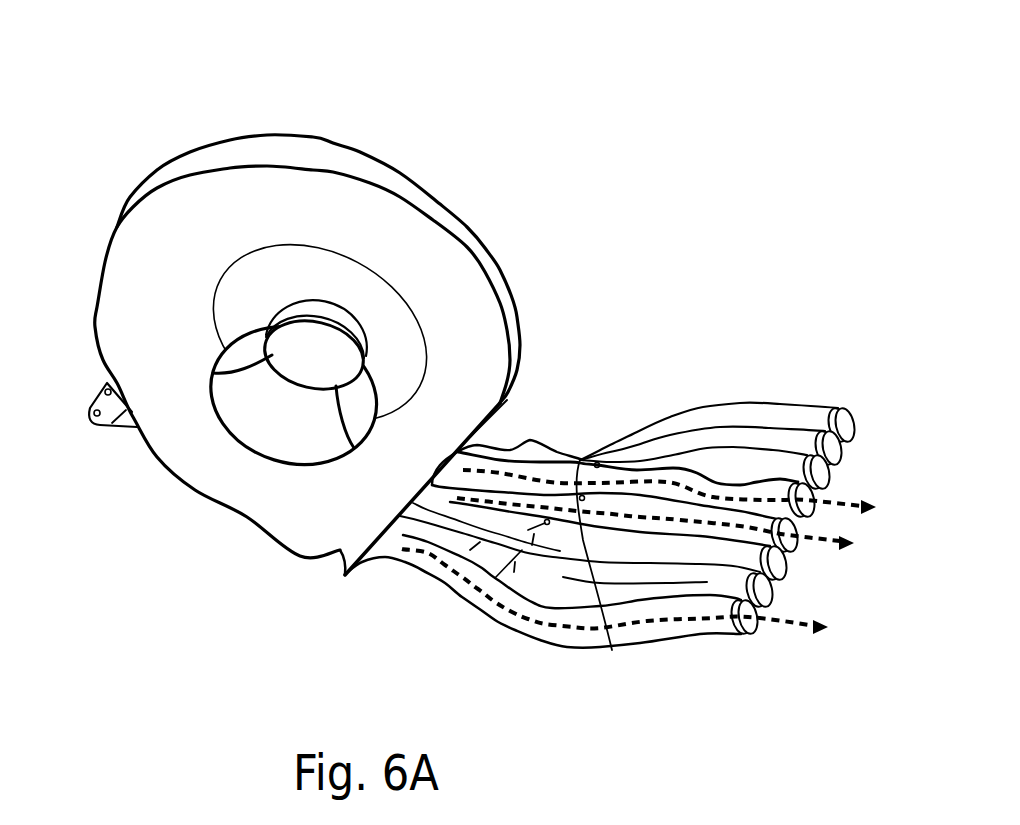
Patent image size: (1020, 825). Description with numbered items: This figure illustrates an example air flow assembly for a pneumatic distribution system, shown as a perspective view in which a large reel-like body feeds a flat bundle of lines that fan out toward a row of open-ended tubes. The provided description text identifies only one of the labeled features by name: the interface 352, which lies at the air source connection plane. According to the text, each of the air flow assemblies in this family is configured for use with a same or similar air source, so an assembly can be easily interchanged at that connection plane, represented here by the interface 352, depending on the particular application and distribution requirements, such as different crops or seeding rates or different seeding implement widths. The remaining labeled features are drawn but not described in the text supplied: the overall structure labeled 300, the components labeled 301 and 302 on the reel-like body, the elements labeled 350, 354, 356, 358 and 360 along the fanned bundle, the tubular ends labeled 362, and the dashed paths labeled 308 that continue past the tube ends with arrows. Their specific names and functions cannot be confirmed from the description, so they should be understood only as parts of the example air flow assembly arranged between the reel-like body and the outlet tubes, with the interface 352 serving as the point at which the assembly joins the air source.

The cable assembly 300 is at (701, 219).
The reel 301 is at (379, 104).
The reel flange 302 is at (460, 240).
The wires / conductors 308 is at (665, 558).
The outer sheath 350 is at (528, 437).
The interface 352 is at (340, 548).
The lower sheath portion 354 is at (513, 630).
The strand band 356 is at (472, 547).
The tie 358 is at (528, 530).
The binding point 360 is at (580, 460).
The tubes 362 is at (755, 412).